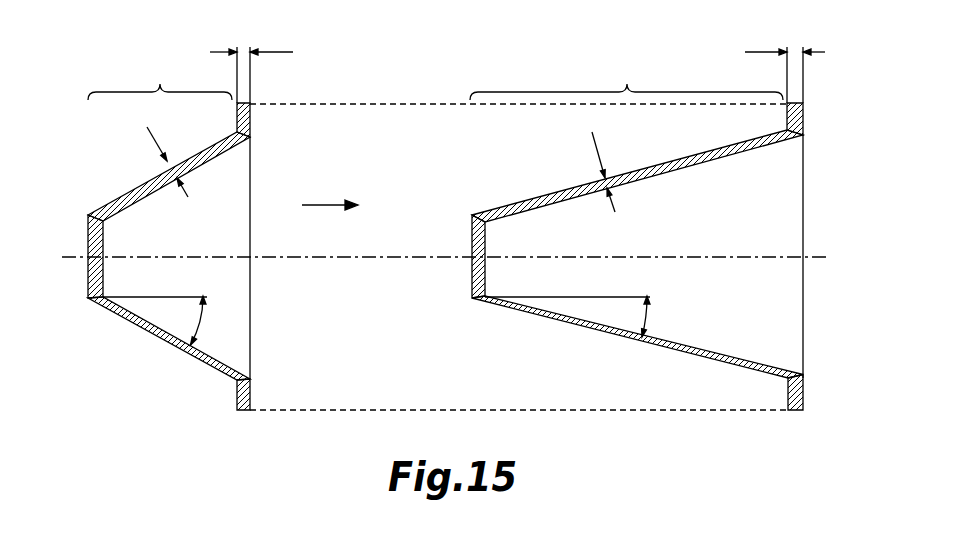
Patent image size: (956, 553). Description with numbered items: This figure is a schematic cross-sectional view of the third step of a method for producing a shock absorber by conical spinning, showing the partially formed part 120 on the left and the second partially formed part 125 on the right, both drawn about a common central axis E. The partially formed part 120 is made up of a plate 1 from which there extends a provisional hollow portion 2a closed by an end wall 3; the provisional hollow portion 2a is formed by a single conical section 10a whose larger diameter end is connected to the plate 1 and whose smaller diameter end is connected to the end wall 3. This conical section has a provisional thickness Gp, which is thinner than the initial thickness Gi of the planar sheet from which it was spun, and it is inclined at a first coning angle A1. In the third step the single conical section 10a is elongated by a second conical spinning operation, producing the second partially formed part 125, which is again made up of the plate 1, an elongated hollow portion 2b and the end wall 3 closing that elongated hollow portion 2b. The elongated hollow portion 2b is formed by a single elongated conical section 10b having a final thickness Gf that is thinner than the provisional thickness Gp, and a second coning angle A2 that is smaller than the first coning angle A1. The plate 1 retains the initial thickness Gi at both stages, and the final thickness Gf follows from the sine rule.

The plate 1 is at (250, 110).
The provisional hollow portion 2a is at (160, 75).
The elongated hollow portion 2b is at (626, 75).
The end wall 3 is at (88, 243).
The single conical section 10a is at (137, 325).
The single elongated conical section 10b is at (573, 323).
The partially formed part 120 is at (125, 183).
The second partially formed part 125 is at (553, 183).
The initial thickness Gi is at (517, 62).
The provisional thickness Gp is at (173, 158).
The final thickness Gf is at (614, 170).
The first coning angle A1 is at (172, 320).
The second coning angle A2 is at (588, 317).
The axis E is at (375, 258).